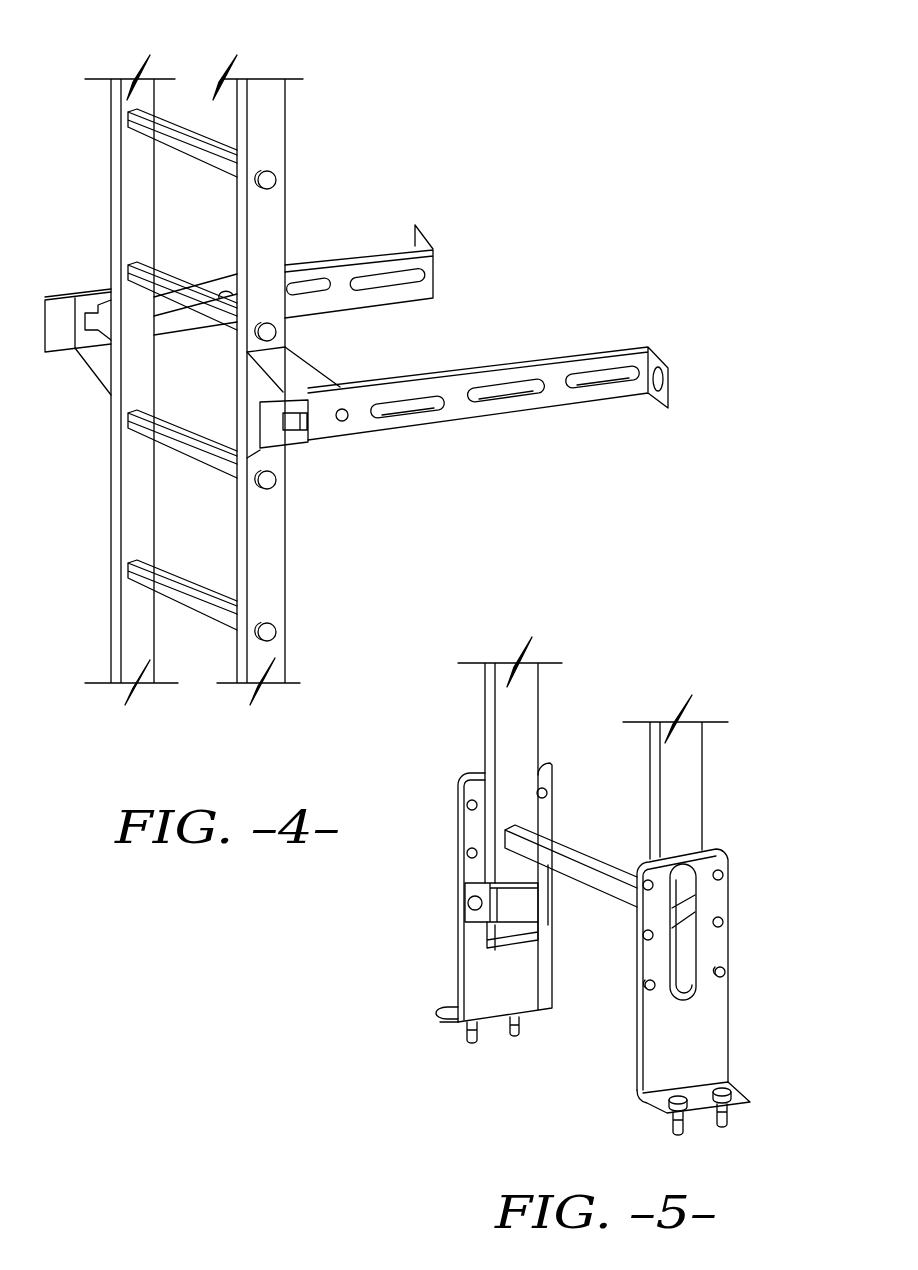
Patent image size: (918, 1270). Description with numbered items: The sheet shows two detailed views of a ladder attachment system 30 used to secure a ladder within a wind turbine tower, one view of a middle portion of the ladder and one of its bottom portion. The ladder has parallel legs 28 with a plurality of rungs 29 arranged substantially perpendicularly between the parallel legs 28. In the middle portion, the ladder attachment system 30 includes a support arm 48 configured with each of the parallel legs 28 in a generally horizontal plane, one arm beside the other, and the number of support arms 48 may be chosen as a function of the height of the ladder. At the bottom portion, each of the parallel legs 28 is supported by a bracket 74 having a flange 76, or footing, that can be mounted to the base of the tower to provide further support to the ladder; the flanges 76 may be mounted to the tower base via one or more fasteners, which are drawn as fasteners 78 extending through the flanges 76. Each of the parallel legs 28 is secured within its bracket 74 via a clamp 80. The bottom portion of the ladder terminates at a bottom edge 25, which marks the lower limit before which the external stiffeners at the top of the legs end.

In FIG. 5, the bottom edge 25 is at (515, 950).
In FIG. 4, the parallel legs 28 is at (140, 487).
In FIG. 5, the parallel legs 28 is at (507, 740).
In FIG. 4, the rungs 29 is at (185, 152).
In FIG. 5, the rungs 29 is at (567, 868).
In FIG. 4, the ladder attachment system 30 is at (364, 104).
In FIG. 5, the ladder attachment system 30 is at (743, 766).
In FIG. 4, the support arm 48 is at (353, 268).
In FIG. 5, the bracket 74 is at (483, 973).
In FIG. 5, the flange 76 is at (450, 1007).
In FIG. 5, the fastener 78 is at (728, 1117).
In FIG. 5, the clamp 80 is at (510, 900).